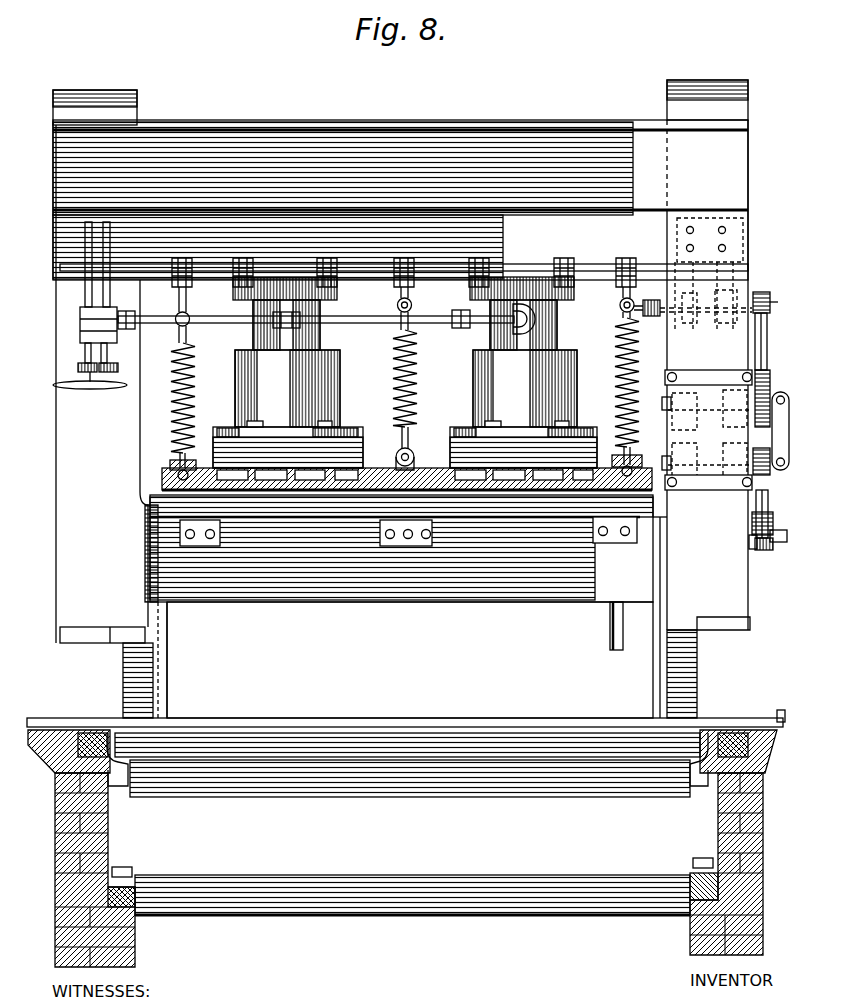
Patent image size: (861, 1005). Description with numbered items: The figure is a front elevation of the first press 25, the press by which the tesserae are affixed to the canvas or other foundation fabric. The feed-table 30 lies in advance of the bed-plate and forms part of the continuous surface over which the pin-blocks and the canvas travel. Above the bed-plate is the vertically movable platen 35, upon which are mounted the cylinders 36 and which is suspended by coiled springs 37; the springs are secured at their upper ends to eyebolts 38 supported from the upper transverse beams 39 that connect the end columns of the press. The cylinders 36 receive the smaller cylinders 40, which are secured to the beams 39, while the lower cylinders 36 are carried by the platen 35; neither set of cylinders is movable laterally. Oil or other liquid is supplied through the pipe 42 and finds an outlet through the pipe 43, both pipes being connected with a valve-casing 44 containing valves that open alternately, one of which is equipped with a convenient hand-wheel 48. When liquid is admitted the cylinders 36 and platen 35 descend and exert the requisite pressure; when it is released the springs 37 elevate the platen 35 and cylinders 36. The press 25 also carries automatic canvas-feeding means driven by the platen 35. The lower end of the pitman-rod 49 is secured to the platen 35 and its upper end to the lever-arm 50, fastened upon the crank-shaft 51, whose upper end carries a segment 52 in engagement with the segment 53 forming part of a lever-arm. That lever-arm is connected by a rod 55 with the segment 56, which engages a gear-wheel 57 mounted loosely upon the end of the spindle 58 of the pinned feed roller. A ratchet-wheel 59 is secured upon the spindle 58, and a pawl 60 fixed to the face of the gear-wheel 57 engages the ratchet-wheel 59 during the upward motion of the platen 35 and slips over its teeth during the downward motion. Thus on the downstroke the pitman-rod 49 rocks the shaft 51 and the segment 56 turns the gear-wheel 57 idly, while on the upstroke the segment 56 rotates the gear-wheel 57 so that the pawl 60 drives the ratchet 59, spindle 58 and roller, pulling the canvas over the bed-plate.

The first press 25 is at (417, 617).
The feed-table 30 is at (579, 506).
The platen 35 is at (397, 466).
The cylinders 36 is at (330, 362).
The coiled springs 37 is at (191, 366).
The eyebolts 38 is at (621, 291).
The upper transverse beams 39 is at (404, 247).
The smaller cylinders 40 is at (322, 305).
The supply pipe 42 is at (110, 293).
The outlet-pipe 43 is at (85, 293).
The valve-casing 44 is at (80, 335).
The hand-wheel 48 is at (104, 389).
The pitman-rod 49 is at (634, 443).
The lever-arm 50 is at (649, 300).
The crank-shaft 51 is at (778, 303).
The segment 52 is at (775, 341).
The segment 53 is at (771, 390).
The rod 55 is at (781, 433).
The segment 56 is at (769, 492).
The gear-wheel 57 is at (767, 551).
The spindle 58 is at (785, 530).
The ratchet-wheel 59 is at (751, 546).
The pawl 60 is at (752, 514).